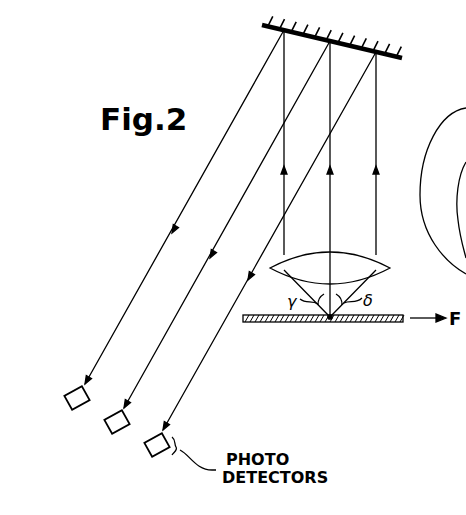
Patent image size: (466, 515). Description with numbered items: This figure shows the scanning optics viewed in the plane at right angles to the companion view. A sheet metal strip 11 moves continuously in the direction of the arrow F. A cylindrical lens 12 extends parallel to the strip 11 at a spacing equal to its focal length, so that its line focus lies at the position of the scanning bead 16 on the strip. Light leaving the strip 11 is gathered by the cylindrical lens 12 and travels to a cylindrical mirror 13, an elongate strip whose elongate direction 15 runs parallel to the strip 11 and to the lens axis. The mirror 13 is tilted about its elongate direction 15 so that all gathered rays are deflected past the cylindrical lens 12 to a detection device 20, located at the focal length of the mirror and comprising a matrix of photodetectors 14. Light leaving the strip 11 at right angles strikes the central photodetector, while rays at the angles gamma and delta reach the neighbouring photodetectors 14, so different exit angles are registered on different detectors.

The sheet metal strip 11 is at (388, 326).
The cylindrical lens 12 is at (352, 256).
The cylindrical mirror 13 is at (398, 63).
The photodetectors 14 is at (265, 288).
The elongate direction 15 is at (326, 62).
The scanning bead 16 is at (330, 324).
The detection device 20 is at (82, 374).